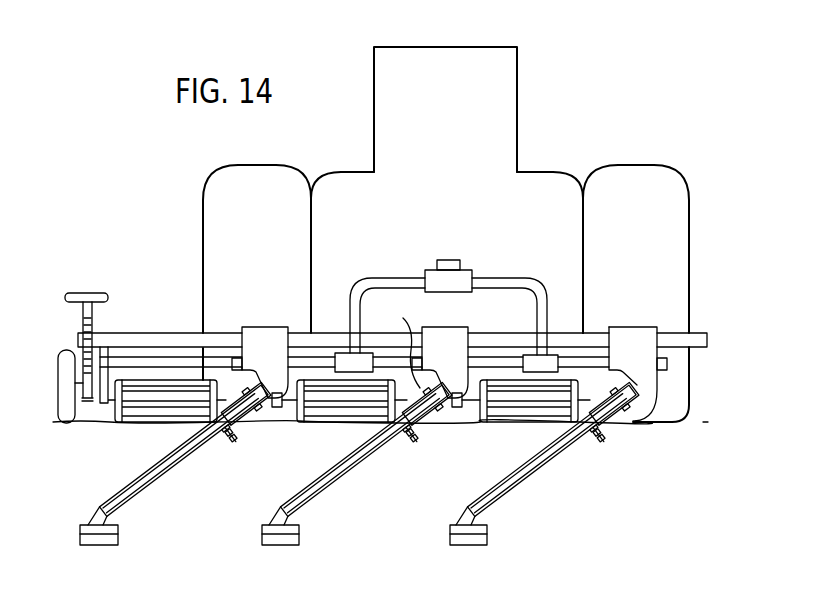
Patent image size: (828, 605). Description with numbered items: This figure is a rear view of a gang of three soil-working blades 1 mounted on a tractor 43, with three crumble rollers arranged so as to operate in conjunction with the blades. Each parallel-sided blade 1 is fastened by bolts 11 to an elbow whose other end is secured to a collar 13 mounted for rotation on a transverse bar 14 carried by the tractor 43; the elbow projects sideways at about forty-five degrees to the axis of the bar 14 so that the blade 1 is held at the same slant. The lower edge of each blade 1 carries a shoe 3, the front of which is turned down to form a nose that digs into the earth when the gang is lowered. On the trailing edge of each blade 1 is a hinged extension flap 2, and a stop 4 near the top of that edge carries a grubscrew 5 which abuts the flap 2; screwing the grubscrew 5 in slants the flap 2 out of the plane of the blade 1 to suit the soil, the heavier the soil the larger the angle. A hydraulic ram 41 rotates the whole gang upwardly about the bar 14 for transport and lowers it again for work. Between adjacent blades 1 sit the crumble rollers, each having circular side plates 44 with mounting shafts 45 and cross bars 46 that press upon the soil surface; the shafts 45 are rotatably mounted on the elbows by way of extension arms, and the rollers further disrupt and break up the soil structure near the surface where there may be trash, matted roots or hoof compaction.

The blade 1 is at (362, 462).
The extension flap 2 is at (142, 470).
The shoe 3 is at (118, 530).
The stop 4 is at (232, 432).
The grubscrew 5 is at (229, 444).
The bolts 11 is at (403, 346).
The collar 13 is at (458, 328).
The transverse bar 14 is at (698, 337).
The hydraulic ram 41 is at (455, 258).
The tractor 43 is at (503, 145).
The circular side plates 44 is at (480, 427).
The mounting shafts 45 is at (291, 424).
The cross bars 46 is at (352, 428).